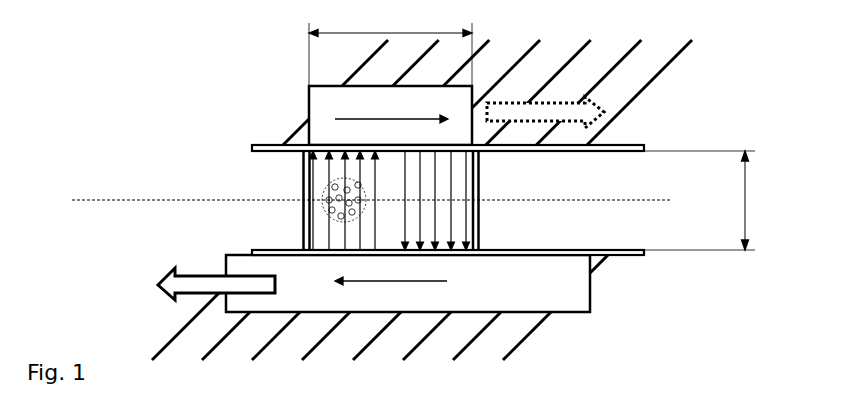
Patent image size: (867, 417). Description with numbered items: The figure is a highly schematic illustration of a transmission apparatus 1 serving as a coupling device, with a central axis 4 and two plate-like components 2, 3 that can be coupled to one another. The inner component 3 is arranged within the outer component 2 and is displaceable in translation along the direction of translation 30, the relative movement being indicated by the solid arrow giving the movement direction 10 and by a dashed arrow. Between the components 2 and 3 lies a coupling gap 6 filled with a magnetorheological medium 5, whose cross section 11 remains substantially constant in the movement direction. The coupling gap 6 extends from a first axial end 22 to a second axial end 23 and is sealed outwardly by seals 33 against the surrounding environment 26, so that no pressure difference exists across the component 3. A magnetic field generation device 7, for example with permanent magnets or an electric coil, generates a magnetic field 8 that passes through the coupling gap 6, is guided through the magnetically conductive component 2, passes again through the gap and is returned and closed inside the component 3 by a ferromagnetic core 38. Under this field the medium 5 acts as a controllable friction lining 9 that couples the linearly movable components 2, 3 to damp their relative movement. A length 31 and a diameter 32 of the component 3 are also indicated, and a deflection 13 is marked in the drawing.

The transmission apparatus 1 is at (195, 52).
The component 2 is at (600, 143).
The component 3 is at (605, 268).
The central axis 4 is at (165, 204).
The magnetorheological medium 5 is at (322, 194).
The coupling gap 6 is at (304, 181).
The magnetic field generation device 7 is at (315, 100).
The magnetic field 8 is at (465, 208).
The friction lining 9 is at (314, 224).
The movement direction 10 is at (262, 287).
The cross section 11 is at (445, 257).
The deflection 13 is at (183, 326).
The axial end 22 is at (298, 240).
The axial end 23 is at (480, 246).
The surrounding environment 26 is at (630, 222).
The direction of translation 30 is at (90, 202).
The length 31 is at (395, 33).
The diameter 32 is at (750, 202).
The seal 33 is at (303, 155).
The core 38 is at (325, 295).